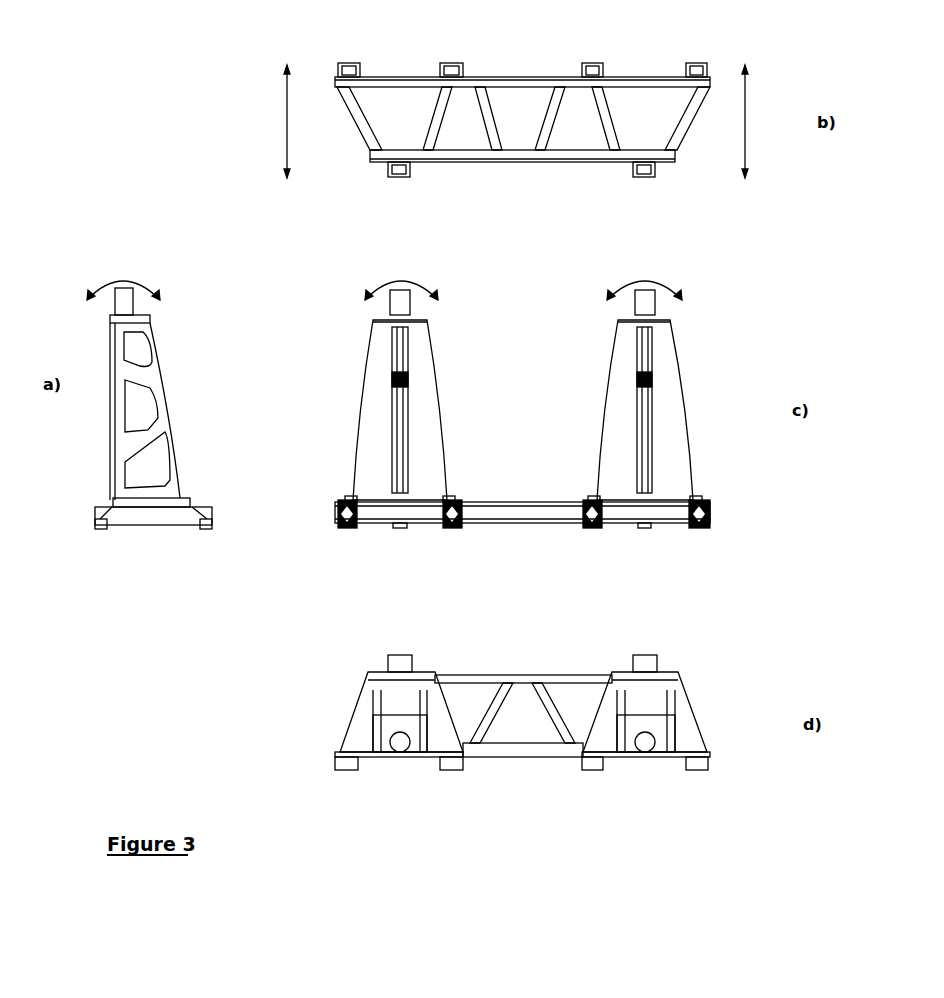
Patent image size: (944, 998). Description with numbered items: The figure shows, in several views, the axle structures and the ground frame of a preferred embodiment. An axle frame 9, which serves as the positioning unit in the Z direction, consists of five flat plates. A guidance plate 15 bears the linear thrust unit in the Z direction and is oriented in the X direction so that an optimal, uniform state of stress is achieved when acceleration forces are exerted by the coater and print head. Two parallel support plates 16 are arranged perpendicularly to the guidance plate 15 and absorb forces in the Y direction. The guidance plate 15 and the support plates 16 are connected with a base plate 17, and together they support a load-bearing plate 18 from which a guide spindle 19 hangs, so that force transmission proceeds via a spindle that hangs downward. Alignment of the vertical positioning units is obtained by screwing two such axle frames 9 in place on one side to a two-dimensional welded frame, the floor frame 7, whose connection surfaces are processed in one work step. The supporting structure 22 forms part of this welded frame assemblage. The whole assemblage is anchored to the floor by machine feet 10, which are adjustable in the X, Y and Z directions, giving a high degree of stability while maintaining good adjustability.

The floor frame 7 is at (520, 510).
The axle frame 9 is at (675, 462).
The machine feet 10 is at (345, 63).
The guidance plate 15 is at (376, 404).
The support plate 16 is at (153, 378).
The base plate 17 is at (177, 498).
The load-bearing plate 18 is at (150, 318).
The guide spindle 19 is at (398, 448).
The supporting structure 22 is at (522, 160).